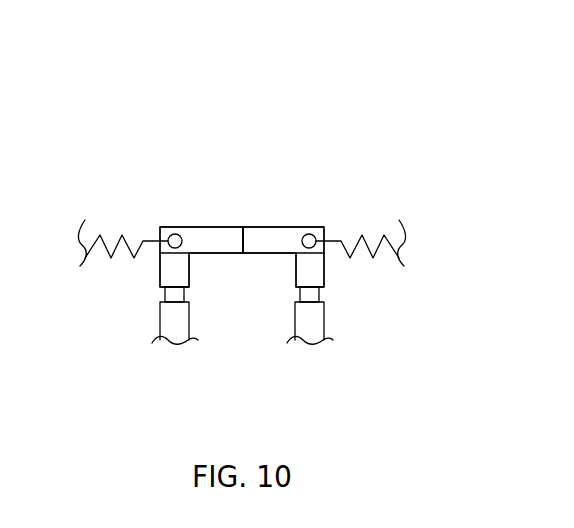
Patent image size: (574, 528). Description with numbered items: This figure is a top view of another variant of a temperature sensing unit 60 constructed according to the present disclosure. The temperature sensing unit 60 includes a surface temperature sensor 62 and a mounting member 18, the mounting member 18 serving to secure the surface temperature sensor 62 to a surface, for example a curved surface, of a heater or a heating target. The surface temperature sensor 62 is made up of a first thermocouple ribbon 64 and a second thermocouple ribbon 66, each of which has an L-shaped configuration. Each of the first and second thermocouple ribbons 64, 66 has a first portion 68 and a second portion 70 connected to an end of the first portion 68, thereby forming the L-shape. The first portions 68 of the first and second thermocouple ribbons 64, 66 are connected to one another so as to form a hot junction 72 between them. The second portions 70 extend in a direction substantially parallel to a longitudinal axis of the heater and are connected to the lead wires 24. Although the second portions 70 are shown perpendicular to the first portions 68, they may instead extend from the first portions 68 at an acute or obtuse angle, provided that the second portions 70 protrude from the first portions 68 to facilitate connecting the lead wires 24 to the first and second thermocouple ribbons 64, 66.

The temperature sensing unit 60 is at (405, 100).
The surface temperature sensor 62 is at (242, 177).
The first thermocouple ribbon 64 is at (172, 221).
The second thermocouple ribbon 66 is at (310, 221).
The first portion 68 is at (217, 235).
The second portion 70 is at (160, 258).
The hot junction 72 is at (243, 242).
The mounting member 18 is at (102, 237).
The lead wires 24 is at (160, 318).